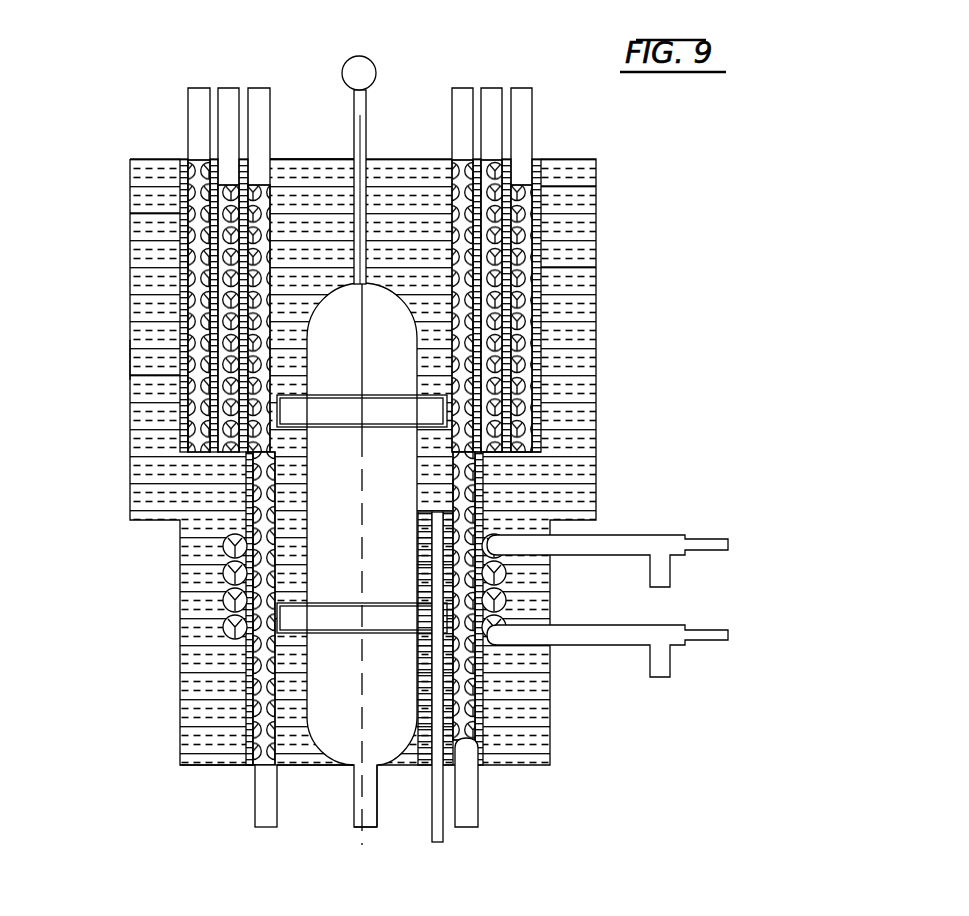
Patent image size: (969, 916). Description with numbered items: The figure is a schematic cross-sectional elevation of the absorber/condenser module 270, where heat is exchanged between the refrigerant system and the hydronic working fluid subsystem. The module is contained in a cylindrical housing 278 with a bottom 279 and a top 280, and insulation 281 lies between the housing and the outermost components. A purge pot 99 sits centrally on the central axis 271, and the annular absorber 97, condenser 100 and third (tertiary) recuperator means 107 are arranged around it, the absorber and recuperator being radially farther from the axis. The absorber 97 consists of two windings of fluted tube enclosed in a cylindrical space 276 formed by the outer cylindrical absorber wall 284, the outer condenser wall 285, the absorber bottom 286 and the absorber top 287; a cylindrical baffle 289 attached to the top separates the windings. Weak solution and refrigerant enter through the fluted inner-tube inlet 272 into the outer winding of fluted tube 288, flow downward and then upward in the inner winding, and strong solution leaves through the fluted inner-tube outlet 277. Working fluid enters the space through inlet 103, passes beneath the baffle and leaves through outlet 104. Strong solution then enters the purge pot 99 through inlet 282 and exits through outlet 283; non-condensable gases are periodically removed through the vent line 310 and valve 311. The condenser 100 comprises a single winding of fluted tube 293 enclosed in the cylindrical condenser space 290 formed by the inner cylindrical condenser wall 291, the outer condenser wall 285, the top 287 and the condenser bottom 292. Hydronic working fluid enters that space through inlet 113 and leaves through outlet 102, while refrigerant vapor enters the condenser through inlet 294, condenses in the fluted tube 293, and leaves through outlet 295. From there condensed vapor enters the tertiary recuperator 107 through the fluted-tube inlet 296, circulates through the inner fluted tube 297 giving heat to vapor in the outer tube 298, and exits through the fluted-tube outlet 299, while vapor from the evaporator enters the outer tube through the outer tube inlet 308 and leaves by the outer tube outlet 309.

The absorber/condenser module 270 is at (158, 98).
The inlet 103 is at (201, 100).
The fluted inner-tube outlet 277 is at (231, 88).
The inlet 294 is at (259, 92).
The valve 311 is at (371, 58).
The outlet 104 is at (491, 95).
The fluted inner-tube inlet 272 is at (526, 108).
The absorber top 287 is at (298, 158).
The vent line 310 is at (353, 128).
The outlet 102 is at (462, 130).
The top 280 is at (150, 158).
The fluted tube 288 is at (526, 188).
The outer cylindrical absorber wall 284 is at (192, 215).
The absorber 97 is at (202, 258).
The cylindrical baffle 289 is at (506, 290).
The cylindrical housing 278 is at (131, 358).
The insulation 281 is at (141, 392).
The cylindrical space 276 is at (192, 433).
The outer condenser wall 285 is at (245, 461).
The condenser 100 is at (240, 486).
The absorber bottom 286 is at (516, 452).
The inner cylindrical condenser wall 291 is at (471, 490).
The outer tube 298 is at (226, 536).
The third (tertiary) recuperator means 107 is at (229, 583).
The inner fluted tube 297 is at (231, 629).
The fluted tube 293 is at (256, 680).
The cylindrical condenser space 290 is at (266, 742).
The bottom 279 is at (211, 768).
The inlet 113 is at (266, 800).
The condenser bottom 292 is at (331, 770).
The purge pot 99 is at (386, 730).
The central axis 271 is at (368, 841).
The outlet 283 is at (381, 806).
The inlet 282 is at (441, 842).
The outlet 295 is at (479, 800).
The fluted-tube inlet 296 is at (706, 540).
The outer tube outlet 309 is at (671, 580).
The fluted-tube outlet 299 is at (708, 636).
The outer tube inlet 308 is at (661, 672).